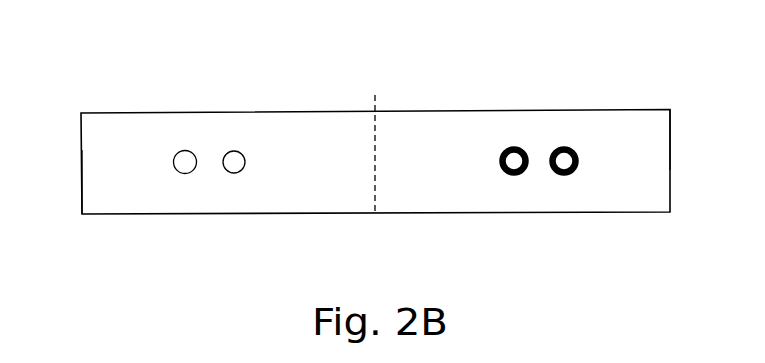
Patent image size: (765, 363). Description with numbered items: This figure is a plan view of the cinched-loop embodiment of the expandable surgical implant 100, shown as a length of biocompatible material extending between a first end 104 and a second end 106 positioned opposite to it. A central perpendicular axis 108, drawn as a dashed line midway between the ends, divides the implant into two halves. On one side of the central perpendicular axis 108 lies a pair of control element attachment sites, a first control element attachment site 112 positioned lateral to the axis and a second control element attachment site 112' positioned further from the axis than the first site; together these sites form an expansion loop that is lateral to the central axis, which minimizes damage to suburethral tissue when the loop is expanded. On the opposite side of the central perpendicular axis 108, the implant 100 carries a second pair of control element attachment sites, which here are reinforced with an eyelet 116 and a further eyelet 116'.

The expandable surgical implant 100 is at (366, 64).
The first end 104 is at (90, 215).
The second end 106 is at (662, 115).
The central perpendicular axis 108 is at (376, 222).
The first control element attachment site 112 is at (265, 159).
The second control element attachment site 112' is at (211, 181).
The eyelet 116 is at (496, 180).
The eyelet 116' is at (586, 180).